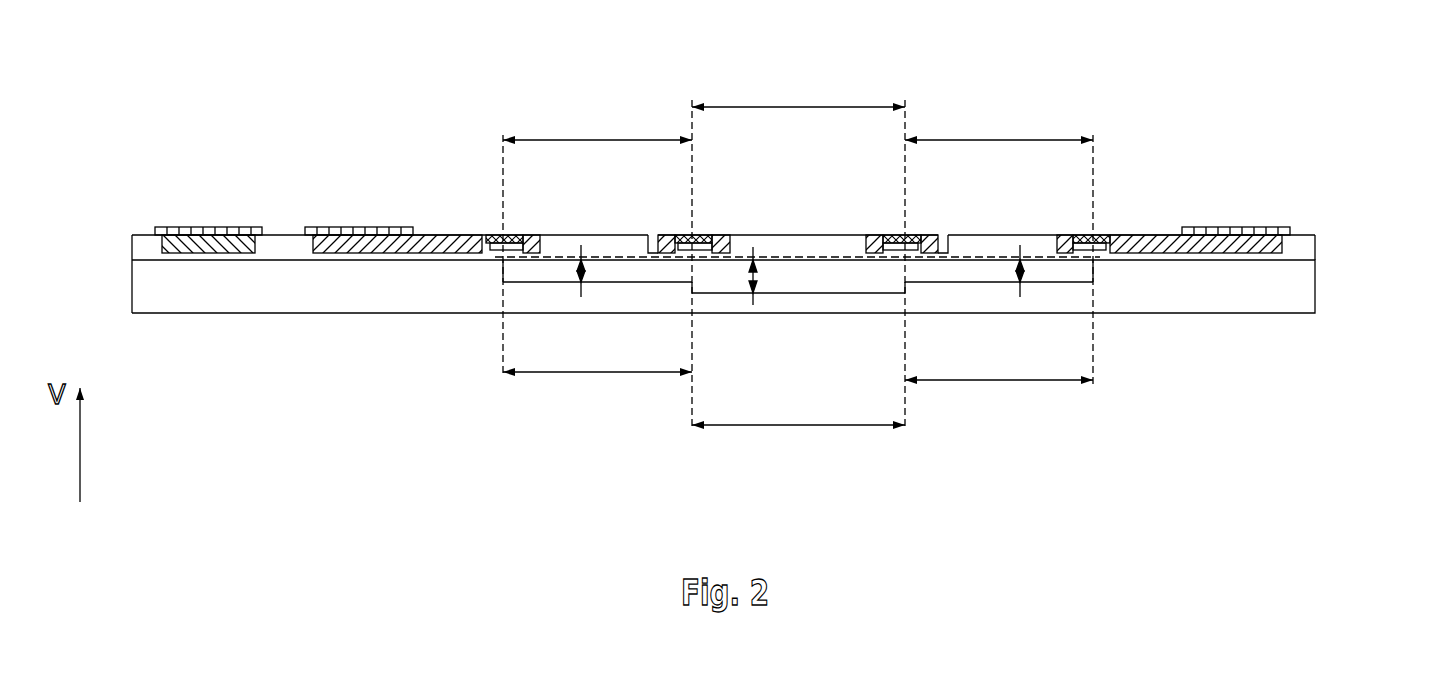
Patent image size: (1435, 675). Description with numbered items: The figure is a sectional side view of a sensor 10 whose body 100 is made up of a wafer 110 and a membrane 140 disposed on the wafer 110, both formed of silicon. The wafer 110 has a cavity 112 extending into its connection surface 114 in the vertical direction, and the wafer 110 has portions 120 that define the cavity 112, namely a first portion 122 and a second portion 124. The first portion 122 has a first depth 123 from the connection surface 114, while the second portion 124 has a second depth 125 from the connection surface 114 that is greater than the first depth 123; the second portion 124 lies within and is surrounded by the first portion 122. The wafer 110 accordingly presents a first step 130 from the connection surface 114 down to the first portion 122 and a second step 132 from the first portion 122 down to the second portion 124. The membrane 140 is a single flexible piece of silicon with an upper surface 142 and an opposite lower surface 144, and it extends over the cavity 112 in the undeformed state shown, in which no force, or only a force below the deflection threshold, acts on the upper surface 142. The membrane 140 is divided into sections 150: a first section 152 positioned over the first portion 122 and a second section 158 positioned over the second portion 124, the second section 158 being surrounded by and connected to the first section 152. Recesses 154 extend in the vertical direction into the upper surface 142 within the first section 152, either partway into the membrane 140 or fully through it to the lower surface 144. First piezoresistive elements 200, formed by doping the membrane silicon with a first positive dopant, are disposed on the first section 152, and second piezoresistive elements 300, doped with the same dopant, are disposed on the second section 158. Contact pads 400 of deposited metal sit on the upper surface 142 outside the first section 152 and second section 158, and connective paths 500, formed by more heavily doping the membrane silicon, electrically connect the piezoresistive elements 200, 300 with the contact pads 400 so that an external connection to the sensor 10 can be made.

The sensor 10 is at (1340, 72).
The body 100 is at (1324, 236).
The wafer 110 is at (1290, 298).
The cavity 112 is at (828, 283).
The connection surface 114 is at (353, 262).
The portions 120 is at (600, 377).
The first portion 122 is at (1000, 385).
The first depth 123 is at (578, 272).
The second portion 124 is at (800, 430).
The second depth 125 is at (751, 274).
The first step 130 is at (502, 273).
The second step 132 is at (692, 290).
The membrane 140 is at (1300, 240).
The upper surface 142 is at (136, 235).
The lower surface 144 is at (155, 262).
The sections 150 is at (602, 138).
The first section 152 is at (1000, 138).
The recesses 154 is at (645, 249).
The second section 158 is at (800, 105).
The first piezoresistive elements 200 is at (497, 238).
The second piezoresistive elements 300 is at (680, 234).
The contact pads 400 is at (184, 233).
The connective paths 500 is at (230, 232).